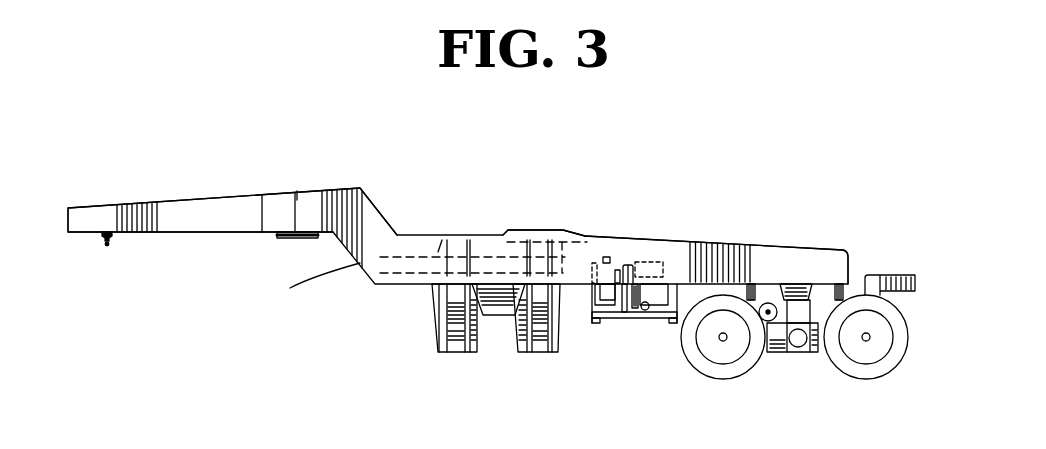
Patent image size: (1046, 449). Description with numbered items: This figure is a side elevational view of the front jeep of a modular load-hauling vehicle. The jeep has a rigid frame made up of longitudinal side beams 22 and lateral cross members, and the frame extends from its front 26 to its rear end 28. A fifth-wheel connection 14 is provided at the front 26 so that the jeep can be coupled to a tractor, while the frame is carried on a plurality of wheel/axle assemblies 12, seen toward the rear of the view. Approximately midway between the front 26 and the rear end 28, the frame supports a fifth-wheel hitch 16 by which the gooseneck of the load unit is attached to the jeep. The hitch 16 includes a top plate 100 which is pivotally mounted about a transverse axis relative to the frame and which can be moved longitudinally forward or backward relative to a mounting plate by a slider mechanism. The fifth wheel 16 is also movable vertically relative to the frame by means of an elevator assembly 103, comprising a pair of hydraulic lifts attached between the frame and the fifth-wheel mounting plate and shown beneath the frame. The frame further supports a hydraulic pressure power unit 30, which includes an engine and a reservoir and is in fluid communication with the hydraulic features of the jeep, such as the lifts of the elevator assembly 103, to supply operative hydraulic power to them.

The wheel/axle assemblies 12 is at (768, 366).
The fifth-wheel connection 14 is at (105, 245).
The fifth-wheel hitch 16 is at (553, 238).
The longitudinal side beams 22 is at (272, 193).
The front of the frame 26 is at (68, 218).
The rear end of the frame 28 is at (838, 262).
The hydraulic pressure power unit 30 is at (616, 323).
The top plate 100 is at (517, 228).
The elevator assembly 103 is at (492, 340).